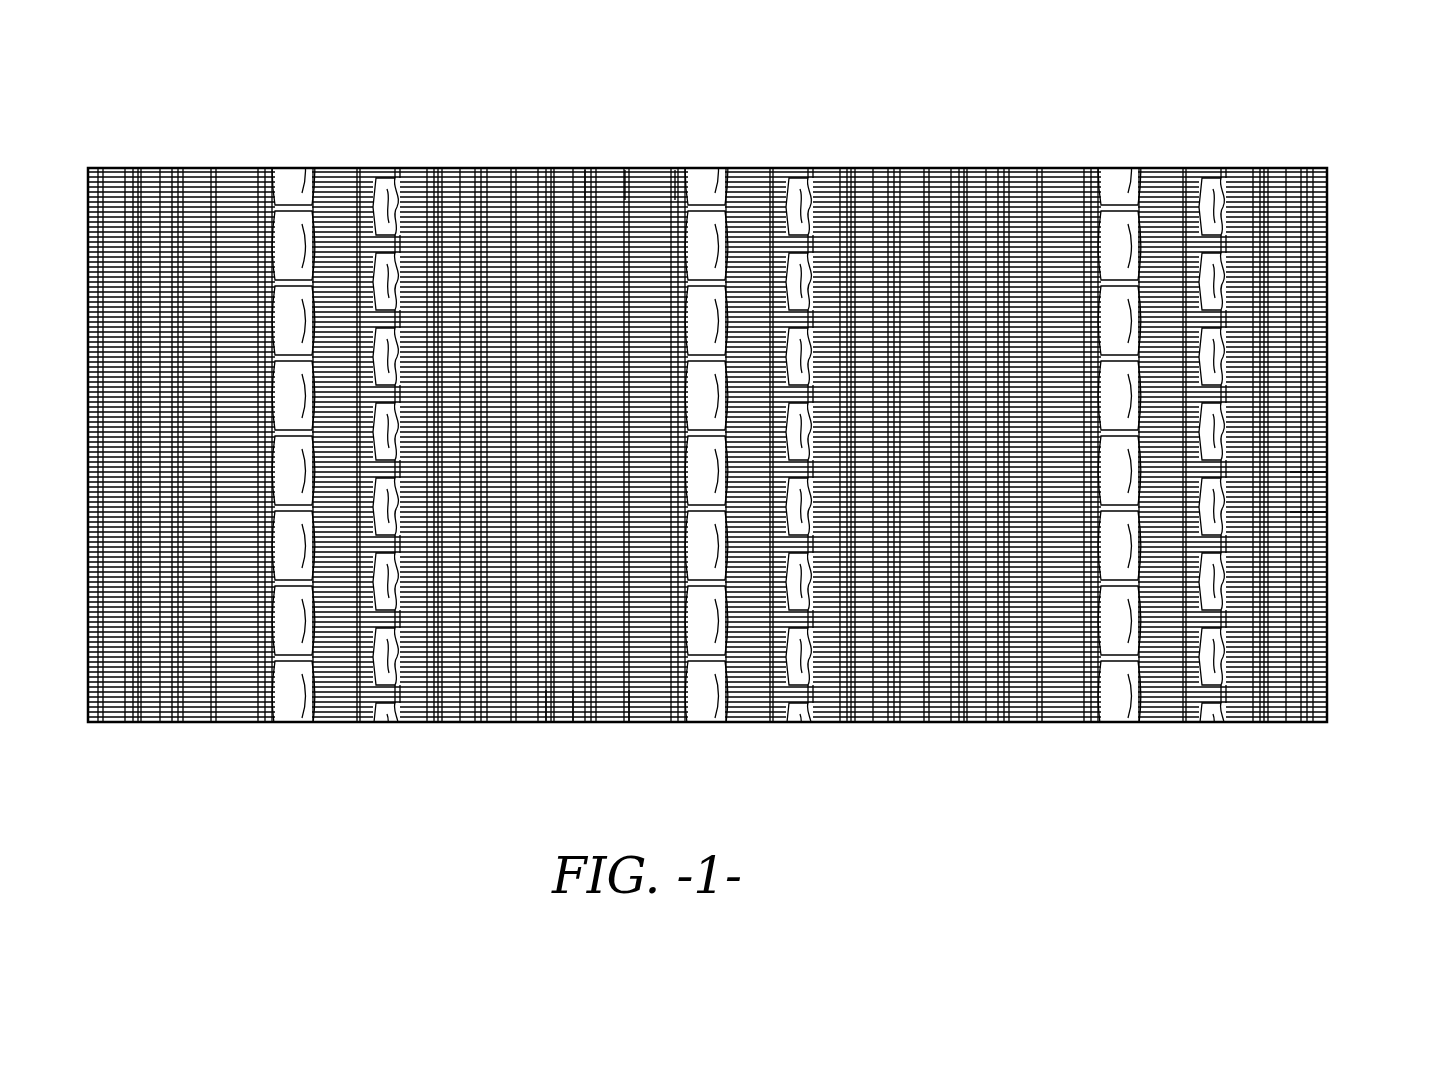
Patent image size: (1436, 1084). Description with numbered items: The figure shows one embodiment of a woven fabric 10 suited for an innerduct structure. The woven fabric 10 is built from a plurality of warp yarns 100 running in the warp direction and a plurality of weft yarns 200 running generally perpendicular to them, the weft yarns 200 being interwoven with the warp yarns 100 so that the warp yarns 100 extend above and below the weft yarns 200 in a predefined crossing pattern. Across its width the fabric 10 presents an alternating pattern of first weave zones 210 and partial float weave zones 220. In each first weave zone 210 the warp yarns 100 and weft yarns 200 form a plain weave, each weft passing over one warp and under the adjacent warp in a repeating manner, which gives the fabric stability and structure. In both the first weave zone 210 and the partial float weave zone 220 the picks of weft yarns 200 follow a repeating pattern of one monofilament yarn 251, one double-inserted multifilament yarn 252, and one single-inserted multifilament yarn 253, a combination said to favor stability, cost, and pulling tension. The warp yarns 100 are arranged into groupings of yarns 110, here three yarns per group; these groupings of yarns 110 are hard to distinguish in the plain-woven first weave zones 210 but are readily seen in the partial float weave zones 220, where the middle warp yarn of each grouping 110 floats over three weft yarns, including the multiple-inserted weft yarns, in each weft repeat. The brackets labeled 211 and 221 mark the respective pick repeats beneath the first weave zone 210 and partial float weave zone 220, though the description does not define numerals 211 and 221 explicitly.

The woven fabric 10 is at (1222, 108).
The warp yarns 100 is at (1327, 423).
The groupings of yarns 110 is at (1340, 453).
The weft yarns 200 is at (586, 172).
The first weave zone 210 is at (1048, 145).
The first warp yarn group 211 is at (1055, 736).
The partial float weave zone 220 is at (830, 142).
The second warp yarn group 221 is at (830, 736).
The monofilament yarn 251 is at (627, 722).
The double-inserted multifilament yarn 252 is at (575, 722).
The single-inserted multifilament yarn 253 is at (543, 722).